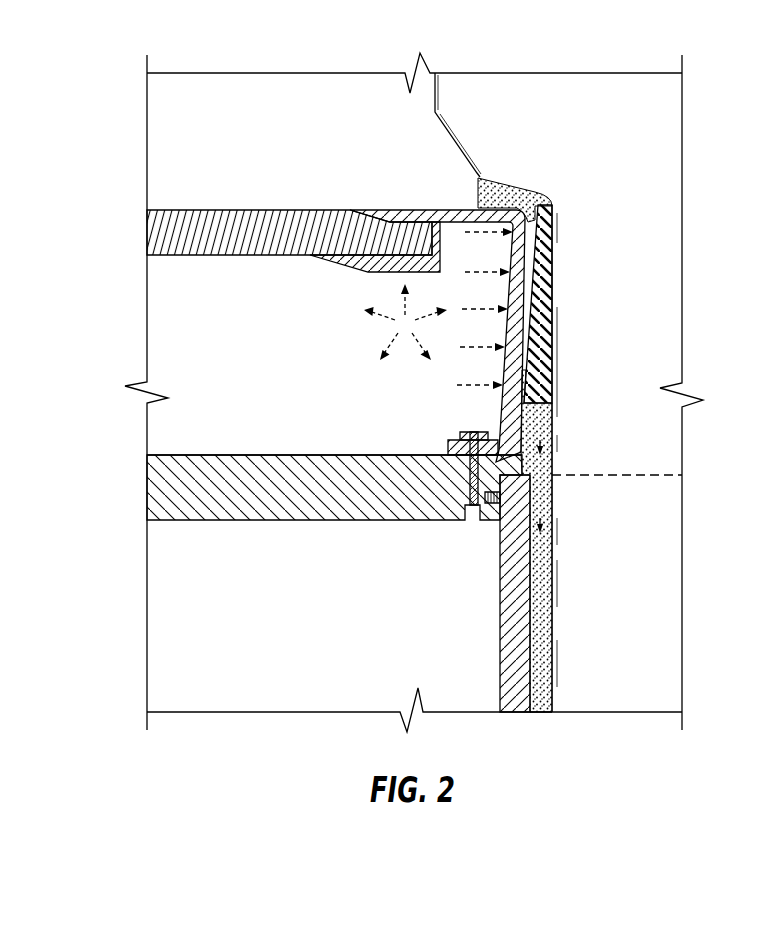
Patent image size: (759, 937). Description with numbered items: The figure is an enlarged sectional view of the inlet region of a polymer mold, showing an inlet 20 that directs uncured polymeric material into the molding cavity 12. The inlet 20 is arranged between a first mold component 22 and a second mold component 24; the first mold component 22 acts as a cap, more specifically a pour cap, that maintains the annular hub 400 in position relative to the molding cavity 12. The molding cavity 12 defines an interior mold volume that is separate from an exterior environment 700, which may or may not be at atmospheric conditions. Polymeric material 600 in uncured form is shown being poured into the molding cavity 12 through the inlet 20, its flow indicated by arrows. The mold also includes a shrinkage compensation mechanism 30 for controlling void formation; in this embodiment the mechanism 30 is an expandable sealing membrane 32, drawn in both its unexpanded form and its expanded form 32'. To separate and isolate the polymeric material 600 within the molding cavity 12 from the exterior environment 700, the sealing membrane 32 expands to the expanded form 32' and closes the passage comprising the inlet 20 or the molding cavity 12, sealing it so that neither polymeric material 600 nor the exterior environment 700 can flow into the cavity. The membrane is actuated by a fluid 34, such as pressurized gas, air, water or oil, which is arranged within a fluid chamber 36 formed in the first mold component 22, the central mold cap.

The molding cavity 12 is at (545, 607).
The inlet 20 is at (461, 192).
The first mold component 22 is at (262, 521).
The second mold component 24 is at (634, 344).
The shrinkage compensation mechanism 30 is at (416, 412).
The expandable sealing membrane 32 is at (533, 272).
The expanded form of the expandable sealing membrane 32' is at (597, 434).
The fluid 34 is at (308, 342).
The fluid chamber 36 is at (262, 454).
The annular hub 400 is at (500, 607).
The polymeric material 600 is at (485, 187).
The exterior environment 700 is at (315, 155).